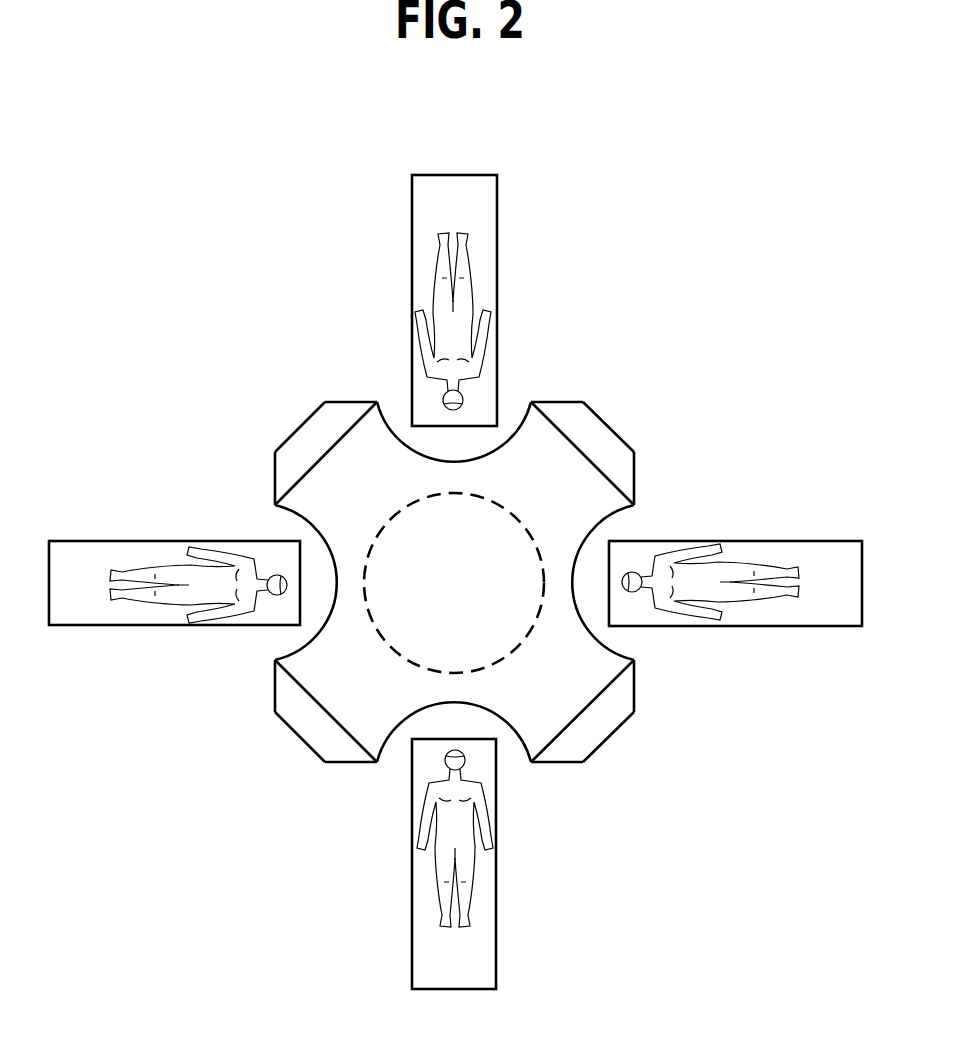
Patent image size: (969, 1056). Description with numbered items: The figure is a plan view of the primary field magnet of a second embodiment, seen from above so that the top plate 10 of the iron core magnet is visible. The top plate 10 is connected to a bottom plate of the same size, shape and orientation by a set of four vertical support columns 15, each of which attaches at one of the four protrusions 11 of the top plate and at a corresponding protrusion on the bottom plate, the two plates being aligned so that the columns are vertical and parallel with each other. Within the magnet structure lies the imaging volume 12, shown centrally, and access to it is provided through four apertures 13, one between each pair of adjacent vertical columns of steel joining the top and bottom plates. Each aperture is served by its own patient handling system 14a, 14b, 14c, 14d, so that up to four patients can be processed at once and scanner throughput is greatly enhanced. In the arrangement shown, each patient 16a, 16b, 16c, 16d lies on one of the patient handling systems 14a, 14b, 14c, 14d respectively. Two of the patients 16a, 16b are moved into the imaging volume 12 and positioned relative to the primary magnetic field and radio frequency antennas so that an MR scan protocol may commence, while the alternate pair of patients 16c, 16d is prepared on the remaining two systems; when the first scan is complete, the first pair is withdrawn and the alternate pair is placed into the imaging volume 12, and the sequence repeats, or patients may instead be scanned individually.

The top plate 10 is at (358, 477).
The protrusion 11 is at (352, 440).
The imaging volume 12 is at (425, 555).
The aperture 13 is at (453, 445).
The patient handling system 14a is at (102, 553).
The patient handling system 14b is at (823, 607).
The patient handling system 14c is at (533, 235).
The patient handling system 14d is at (487, 930).
The vertical support column 15 is at (302, 445).
The patient 16a is at (230, 588).
The patient 16b is at (785, 592).
The patient 16c is at (447, 285).
The patient 16d is at (443, 890).